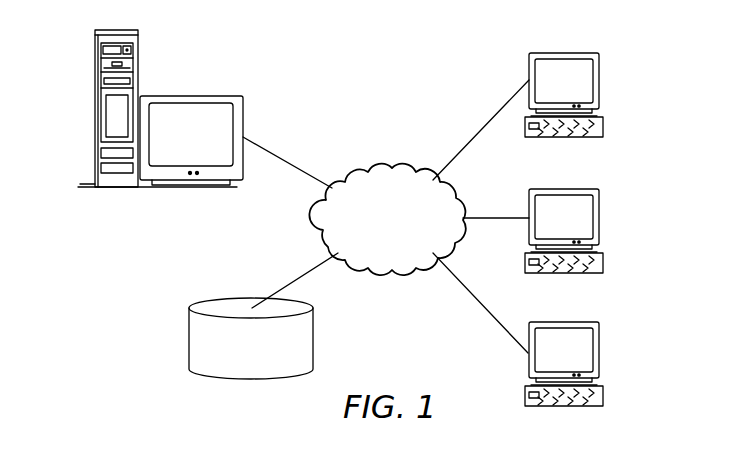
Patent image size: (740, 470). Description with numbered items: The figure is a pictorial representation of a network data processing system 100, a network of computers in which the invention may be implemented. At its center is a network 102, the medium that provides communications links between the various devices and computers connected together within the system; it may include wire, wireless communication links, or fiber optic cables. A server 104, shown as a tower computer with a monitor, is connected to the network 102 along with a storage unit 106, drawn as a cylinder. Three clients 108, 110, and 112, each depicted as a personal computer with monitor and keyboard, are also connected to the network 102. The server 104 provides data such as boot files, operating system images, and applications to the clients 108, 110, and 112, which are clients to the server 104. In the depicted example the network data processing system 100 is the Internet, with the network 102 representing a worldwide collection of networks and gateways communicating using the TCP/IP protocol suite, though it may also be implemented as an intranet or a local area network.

The network data processing system 100 is at (465, 62).
The network 102 is at (365, 176).
The server 104 is at (96, 112).
The storage unit 106 is at (189, 341).
The client 108 is at (599, 83).
The client 110 is at (599, 207).
The client 112 is at (599, 350).